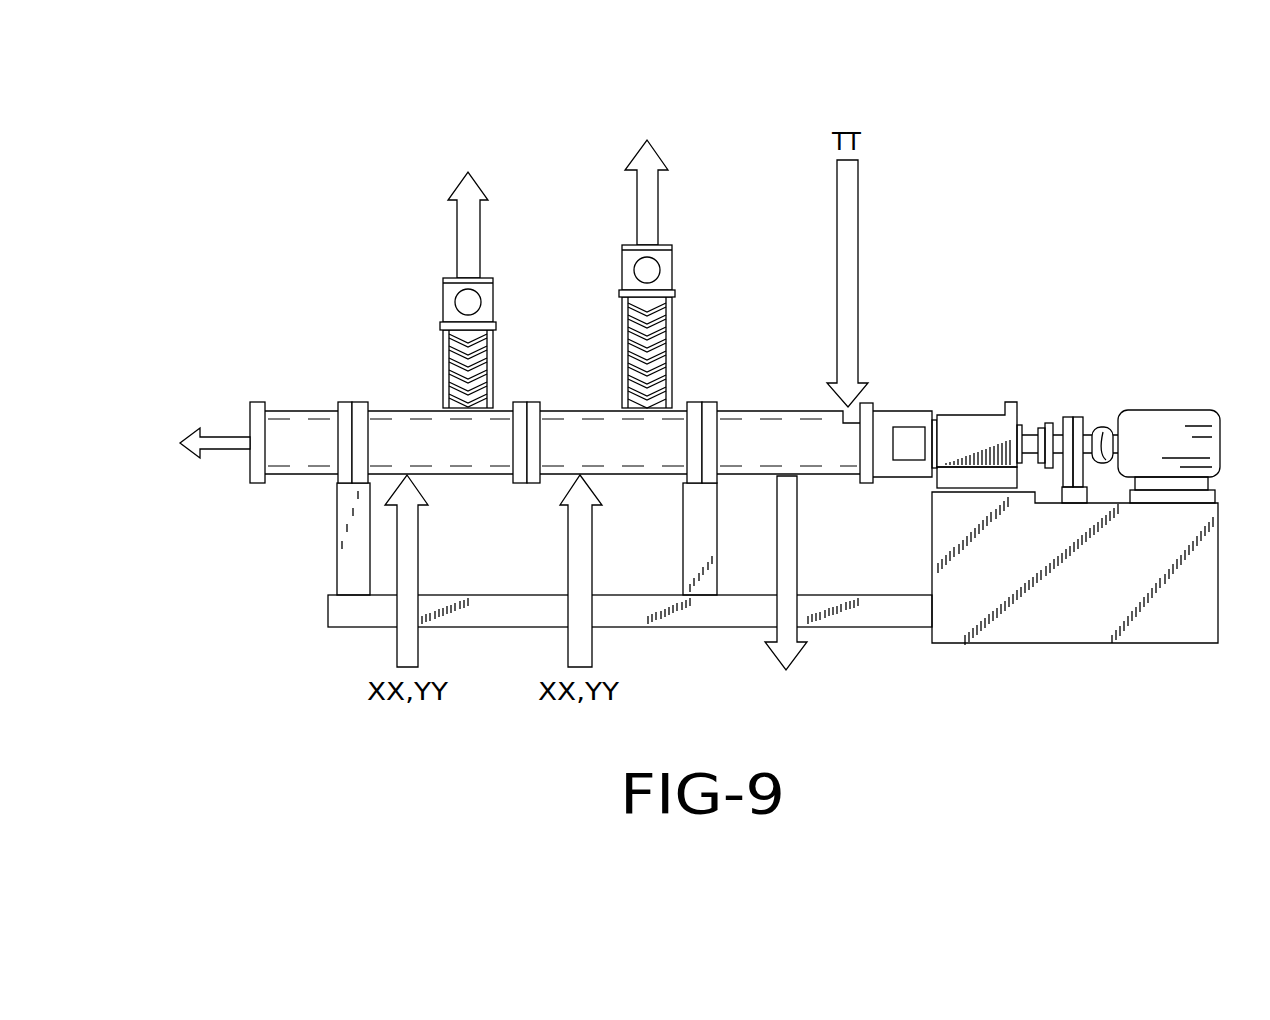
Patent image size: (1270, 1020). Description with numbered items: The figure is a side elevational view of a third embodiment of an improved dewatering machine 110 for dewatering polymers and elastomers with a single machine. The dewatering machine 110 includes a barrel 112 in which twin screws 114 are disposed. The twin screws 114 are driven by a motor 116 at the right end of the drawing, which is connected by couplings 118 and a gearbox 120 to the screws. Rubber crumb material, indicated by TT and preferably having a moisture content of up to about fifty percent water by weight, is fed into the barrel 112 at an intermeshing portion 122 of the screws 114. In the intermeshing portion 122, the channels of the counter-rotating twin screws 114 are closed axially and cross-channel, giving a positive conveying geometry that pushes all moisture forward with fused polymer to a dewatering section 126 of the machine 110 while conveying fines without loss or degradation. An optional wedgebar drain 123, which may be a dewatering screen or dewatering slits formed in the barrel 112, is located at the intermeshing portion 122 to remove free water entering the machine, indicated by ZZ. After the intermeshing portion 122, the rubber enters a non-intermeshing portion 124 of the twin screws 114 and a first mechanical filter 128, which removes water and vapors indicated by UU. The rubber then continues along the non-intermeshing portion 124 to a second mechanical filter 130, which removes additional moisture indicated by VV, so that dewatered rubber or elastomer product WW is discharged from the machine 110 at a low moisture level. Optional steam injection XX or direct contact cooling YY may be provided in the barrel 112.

The dewatering machine 110 is at (1097, 152).
The barrel 112 is at (478, 477).
The twin screws 114 is at (247, 462).
The motor 116 is at (1172, 410).
The couplings 118 is at (1045, 422).
The gearbox 120 is at (960, 413).
The intermeshing portion 122 is at (786, 445).
The wedgebar drain 123 is at (766, 477).
The non-intermeshing portion 124 is at (427, 445).
The dewatering section 126 is at (620, 408).
The first mechanical filter 128 is at (675, 272).
The second mechanical filter 130 is at (443, 300).